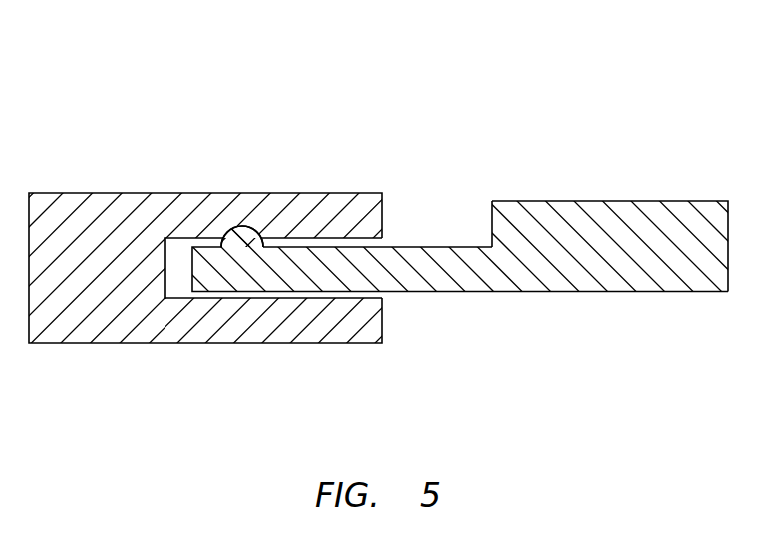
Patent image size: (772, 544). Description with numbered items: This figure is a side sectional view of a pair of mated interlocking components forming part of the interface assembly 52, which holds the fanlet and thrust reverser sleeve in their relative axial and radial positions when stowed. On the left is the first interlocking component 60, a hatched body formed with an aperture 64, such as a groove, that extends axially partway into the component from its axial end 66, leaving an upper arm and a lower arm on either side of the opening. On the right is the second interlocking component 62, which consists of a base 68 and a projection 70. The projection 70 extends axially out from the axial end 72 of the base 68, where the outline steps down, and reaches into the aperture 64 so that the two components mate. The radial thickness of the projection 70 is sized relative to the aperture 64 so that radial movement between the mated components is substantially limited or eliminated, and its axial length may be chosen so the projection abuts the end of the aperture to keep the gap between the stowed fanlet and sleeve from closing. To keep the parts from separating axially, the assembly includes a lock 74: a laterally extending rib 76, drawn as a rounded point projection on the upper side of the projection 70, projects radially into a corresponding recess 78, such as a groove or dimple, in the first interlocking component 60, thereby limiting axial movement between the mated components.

The interface assembly 52 is at (533, 99).
The first interlocking component 60 is at (110, 184).
The second interlocking component 62 is at (621, 192).
The aperture 64 is at (176, 287).
The axial end 66 is at (382, 328).
The base 68 is at (633, 292).
The projection 70 is at (455, 292).
The axial end 72 is at (491, 214).
The lock 74 is at (241, 204).
The rib 76 is at (241, 233).
The recess 78 is at (263, 232).